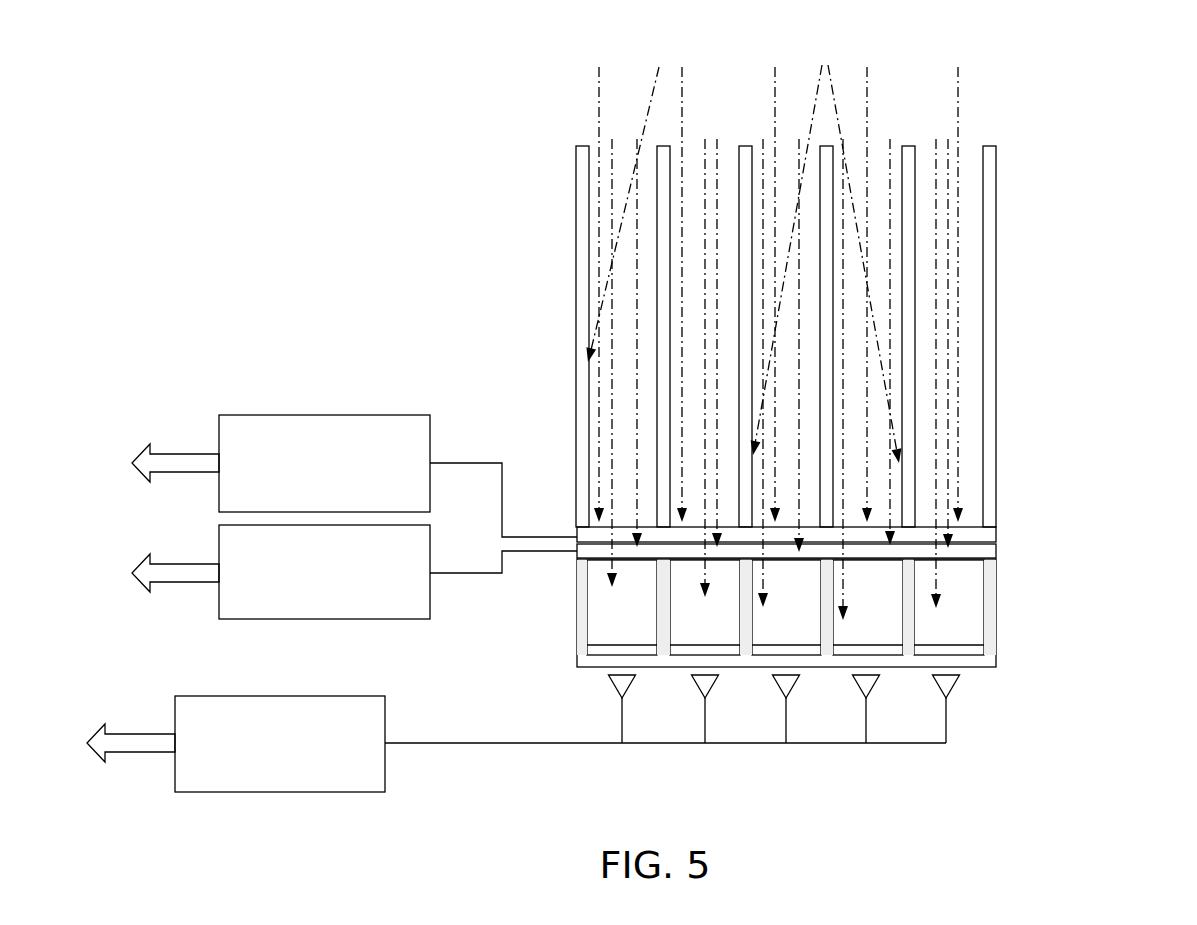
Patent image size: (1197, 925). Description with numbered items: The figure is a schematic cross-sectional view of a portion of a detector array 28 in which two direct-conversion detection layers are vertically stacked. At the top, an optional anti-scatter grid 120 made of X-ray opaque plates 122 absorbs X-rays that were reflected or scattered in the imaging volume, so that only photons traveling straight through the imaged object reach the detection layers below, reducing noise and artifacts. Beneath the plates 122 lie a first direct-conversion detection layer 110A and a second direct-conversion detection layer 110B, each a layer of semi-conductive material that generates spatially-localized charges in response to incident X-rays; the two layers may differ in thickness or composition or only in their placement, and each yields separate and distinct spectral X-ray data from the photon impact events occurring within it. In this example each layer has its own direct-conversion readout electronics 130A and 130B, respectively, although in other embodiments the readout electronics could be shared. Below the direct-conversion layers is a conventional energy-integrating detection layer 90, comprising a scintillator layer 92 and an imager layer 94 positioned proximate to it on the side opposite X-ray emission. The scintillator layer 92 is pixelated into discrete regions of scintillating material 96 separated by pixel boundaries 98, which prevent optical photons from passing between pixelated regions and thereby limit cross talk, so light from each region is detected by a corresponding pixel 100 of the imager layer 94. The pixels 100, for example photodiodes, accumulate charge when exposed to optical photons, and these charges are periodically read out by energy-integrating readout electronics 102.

The detector array 28 is at (1070, 58).
The energy-integrating detection layer 90 is at (556, 560).
The scintillator layer 92 is at (1015, 600).
The imager layer 94 is at (1018, 657).
The scintillating material 96 is at (647, 632).
The pixel boundaries 98 is at (913, 625).
The pixel 100 is at (865, 649).
The energy-integrating readout electronics 102 is at (357, 696).
The first direct-conversion detection layer 110A is at (1015, 533).
The second direct-conversion detection layer 110B is at (1015, 553).
The anti-scatter grid 120 is at (1018, 286).
The X-ray opaque plates 122 is at (915, 192).
The direct-conversion readout electronics 130A is at (348, 415).
The direct-conversion readout electronics 130B is at (240, 622).